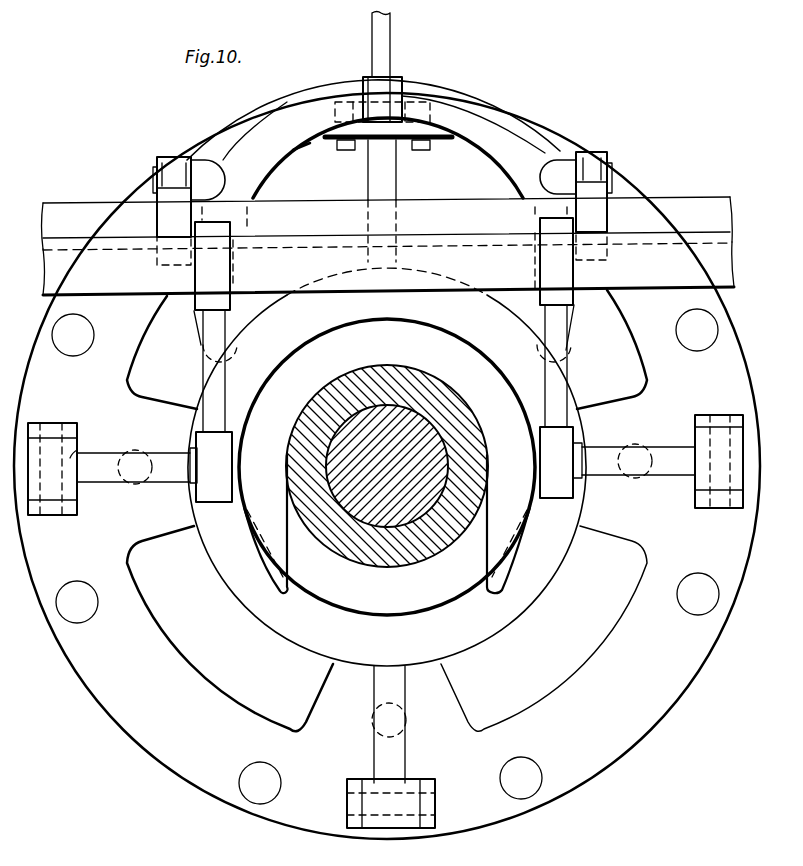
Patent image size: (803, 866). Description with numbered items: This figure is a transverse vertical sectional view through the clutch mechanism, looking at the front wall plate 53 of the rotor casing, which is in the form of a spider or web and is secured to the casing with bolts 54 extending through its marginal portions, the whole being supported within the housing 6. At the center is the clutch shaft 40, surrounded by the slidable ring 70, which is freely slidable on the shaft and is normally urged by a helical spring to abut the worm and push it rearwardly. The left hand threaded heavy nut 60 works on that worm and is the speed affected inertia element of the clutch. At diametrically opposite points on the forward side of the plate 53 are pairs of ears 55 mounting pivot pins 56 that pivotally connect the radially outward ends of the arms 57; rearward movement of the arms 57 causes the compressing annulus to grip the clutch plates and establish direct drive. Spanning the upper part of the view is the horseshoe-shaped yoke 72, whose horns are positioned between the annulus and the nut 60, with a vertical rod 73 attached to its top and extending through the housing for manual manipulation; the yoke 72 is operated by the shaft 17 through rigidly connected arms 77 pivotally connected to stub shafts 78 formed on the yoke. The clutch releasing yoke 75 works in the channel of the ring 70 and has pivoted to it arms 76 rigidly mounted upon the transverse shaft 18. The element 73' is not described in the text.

The front wall plate 53 is at (123, 742).
The bolts 54 is at (258, 790).
The housing 6 is at (138, 362).
The clutch releasing yoke 75 is at (307, 358).
The slidable ring 70 is at (410, 570).
The clutch shaft 40 is at (437, 458).
The nut 60 is at (537, 582).
The arms 76 is at (205, 372).
The arms 57 is at (386, 178).
The ears 55 is at (52, 423).
The pivot pins 56 is at (62, 452).
The shaft 17 is at (712, 210).
The transverse shaft 18 is at (715, 259).
The yoke 72 is at (497, 133).
The vertical rod 73 is at (382, 67).
The cross plate 73' is at (388, 159).
The arms 77 is at (165, 208).
The stub shafts 78 is at (205, 168).